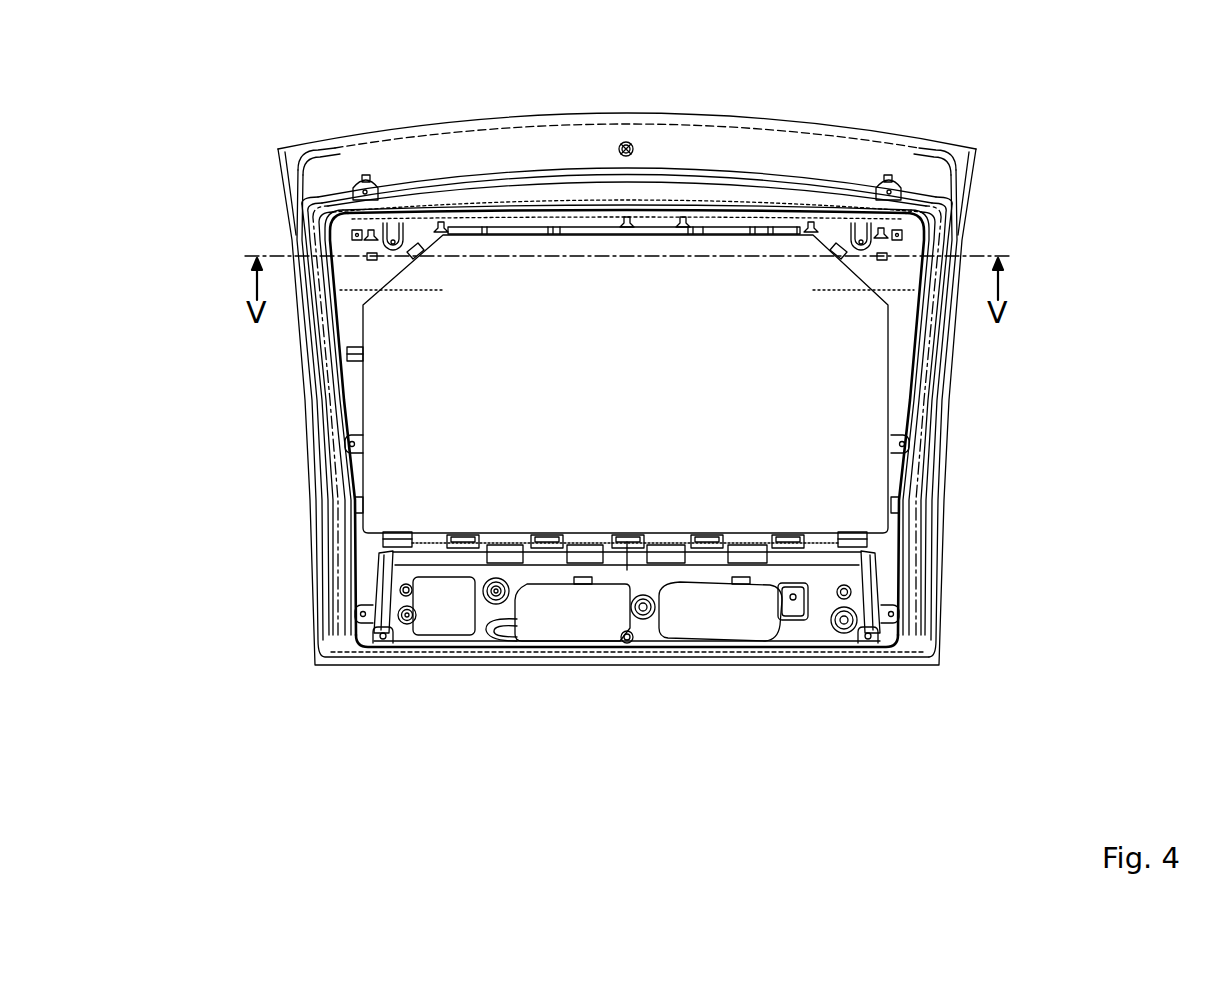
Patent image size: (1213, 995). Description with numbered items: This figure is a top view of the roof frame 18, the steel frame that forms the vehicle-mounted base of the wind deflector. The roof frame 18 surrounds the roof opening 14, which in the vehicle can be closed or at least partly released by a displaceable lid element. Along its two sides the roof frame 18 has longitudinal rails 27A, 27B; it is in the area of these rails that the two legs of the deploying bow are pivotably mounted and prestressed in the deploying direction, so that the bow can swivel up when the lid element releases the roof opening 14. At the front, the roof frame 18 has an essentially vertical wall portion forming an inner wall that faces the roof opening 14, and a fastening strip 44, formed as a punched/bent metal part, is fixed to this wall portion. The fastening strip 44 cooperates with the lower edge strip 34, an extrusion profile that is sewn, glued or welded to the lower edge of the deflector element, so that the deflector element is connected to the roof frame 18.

The roof frame 18 is at (824, 113).
The roof opening 14 is at (883, 362).
The longitudinal rail 27A is at (307, 438).
The longitudinal rail 27B is at (932, 424).
The lower edge strip 34 is at (718, 218).
The fastening strip 44 is at (626, 138).